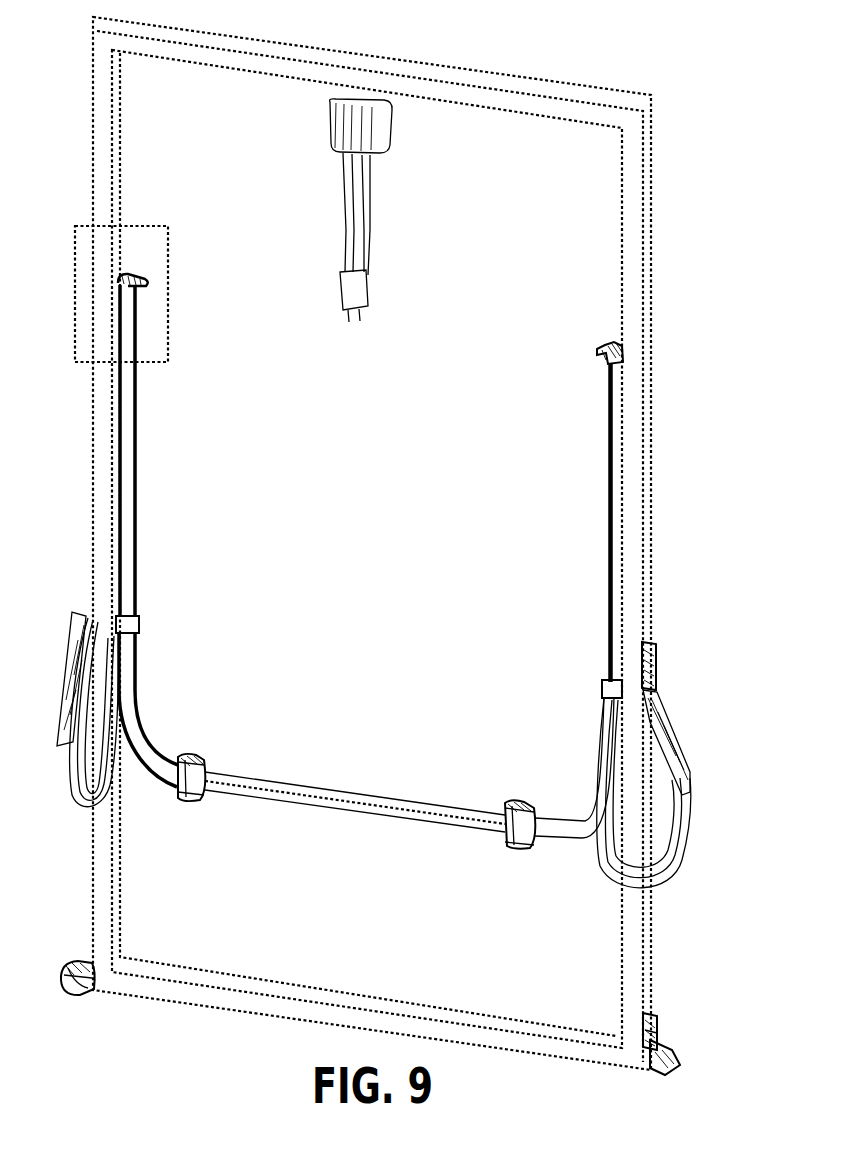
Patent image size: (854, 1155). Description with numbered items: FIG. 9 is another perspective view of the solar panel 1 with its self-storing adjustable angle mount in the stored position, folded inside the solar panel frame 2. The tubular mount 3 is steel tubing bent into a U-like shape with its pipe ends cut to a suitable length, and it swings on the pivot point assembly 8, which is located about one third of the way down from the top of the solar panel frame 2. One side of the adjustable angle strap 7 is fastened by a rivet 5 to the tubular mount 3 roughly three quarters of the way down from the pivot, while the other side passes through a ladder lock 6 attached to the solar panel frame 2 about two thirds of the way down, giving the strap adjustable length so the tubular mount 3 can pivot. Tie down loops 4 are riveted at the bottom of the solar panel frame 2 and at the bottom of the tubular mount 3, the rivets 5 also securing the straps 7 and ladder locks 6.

The inner frame panel 1 is at (588, 178).
The solar panel frame 2 is at (655, 240).
The tubular mount 3 is at (139, 423).
The tie down loops 4 is at (206, 803).
The rivet 5 is at (188, 755).
The ladder lock 6 is at (661, 689).
The adjustable angle strap 7 is at (689, 806).
The pivot point assembly 8 is at (104, 222).